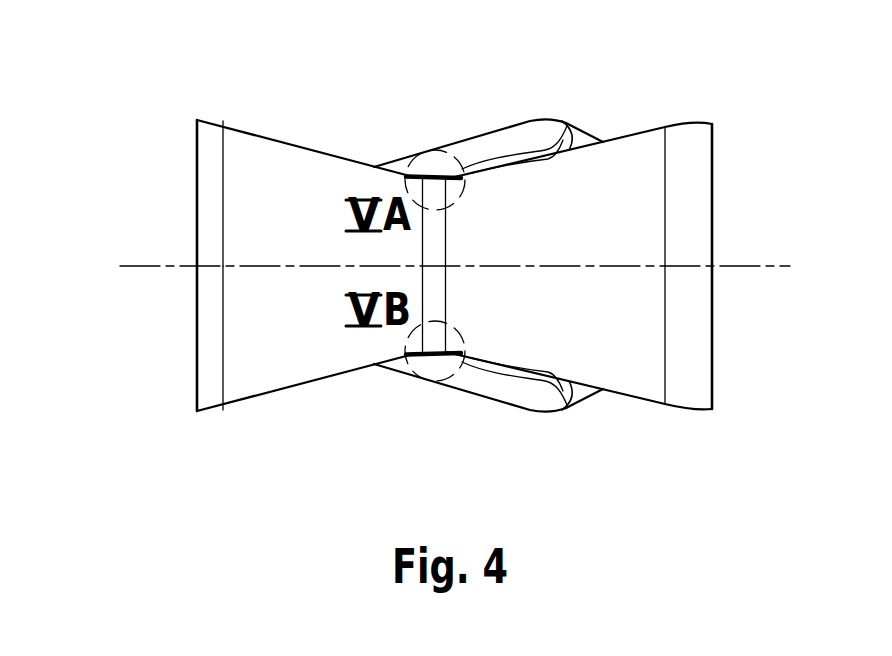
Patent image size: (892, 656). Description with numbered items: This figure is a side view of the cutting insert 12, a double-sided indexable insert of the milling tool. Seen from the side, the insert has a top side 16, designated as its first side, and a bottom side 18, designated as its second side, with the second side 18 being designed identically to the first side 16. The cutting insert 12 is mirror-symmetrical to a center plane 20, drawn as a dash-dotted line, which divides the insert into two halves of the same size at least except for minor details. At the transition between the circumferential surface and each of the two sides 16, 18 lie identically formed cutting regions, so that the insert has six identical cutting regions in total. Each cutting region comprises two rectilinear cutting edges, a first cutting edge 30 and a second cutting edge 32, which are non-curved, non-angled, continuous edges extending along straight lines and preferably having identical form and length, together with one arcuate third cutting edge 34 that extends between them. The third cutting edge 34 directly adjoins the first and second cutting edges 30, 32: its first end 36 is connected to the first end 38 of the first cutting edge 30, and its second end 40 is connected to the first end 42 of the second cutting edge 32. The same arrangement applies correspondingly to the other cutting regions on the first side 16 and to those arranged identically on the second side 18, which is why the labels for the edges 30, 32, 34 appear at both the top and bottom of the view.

The cutting insert 12 is at (118, 102).
The top side 16 is at (472, 110).
The bottom side 18 is at (472, 421).
The center plane 20 is at (140, 263).
The first cutting edge 30 is at (318, 150).
The second cutting edge 32 is at (567, 134).
The third cutting edge 34 is at (197, 118).
The first end of the third cutting edge 36 is at (444, 265).
The first end of the first cutting edge 38 is at (223, 120).
The second end of the third cutting edge 40 is at (444, 269).
The first end of the second cutting edge 42 is at (665, 125).